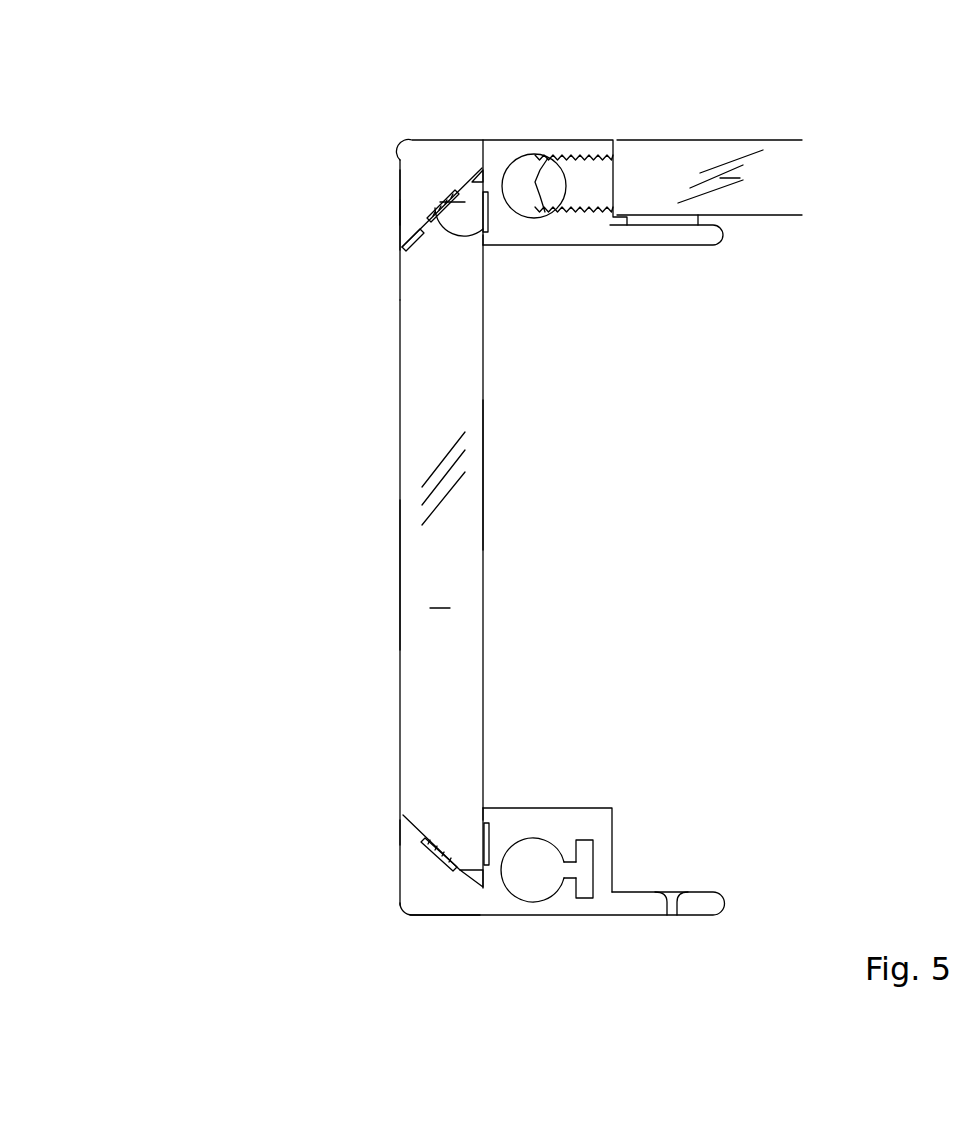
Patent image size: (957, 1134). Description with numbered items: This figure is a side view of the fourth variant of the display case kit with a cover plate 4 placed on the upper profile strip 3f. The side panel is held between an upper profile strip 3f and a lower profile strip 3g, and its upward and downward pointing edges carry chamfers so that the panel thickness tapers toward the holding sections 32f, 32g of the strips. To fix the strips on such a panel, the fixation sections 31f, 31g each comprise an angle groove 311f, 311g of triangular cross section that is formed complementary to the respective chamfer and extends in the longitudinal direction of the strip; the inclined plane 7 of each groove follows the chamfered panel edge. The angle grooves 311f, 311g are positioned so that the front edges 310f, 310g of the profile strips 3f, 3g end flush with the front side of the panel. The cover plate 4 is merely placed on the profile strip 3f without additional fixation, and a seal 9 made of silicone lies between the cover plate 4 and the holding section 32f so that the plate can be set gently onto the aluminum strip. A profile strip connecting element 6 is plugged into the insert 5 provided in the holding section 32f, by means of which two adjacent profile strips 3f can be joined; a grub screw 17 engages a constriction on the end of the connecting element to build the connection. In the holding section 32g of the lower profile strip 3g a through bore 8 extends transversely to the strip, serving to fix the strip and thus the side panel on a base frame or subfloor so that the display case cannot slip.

The profile strip 3f is at (557, 247).
The profile strip 3g is at (613, 832).
The fixation section 31f is at (423, 183).
The fixation section 31g is at (433, 893).
The holding section 32f is at (663, 237).
The holding section 32g is at (708, 908).
The front edge 310f is at (402, 213).
The front edge 310g is at (400, 832).
The angle groove 311f is at (478, 172).
The angle groove 311g is at (482, 880).
The cover plate 4 is at (752, 203).
The insert 5 is at (533, 887).
The profile strip connecting element 6 is at (542, 139).
The inclined seal plane 7 is at (446, 196).
The through bore 8 is at (673, 898).
The seal 9 is at (675, 220).
The grub screw 17 is at (580, 182).